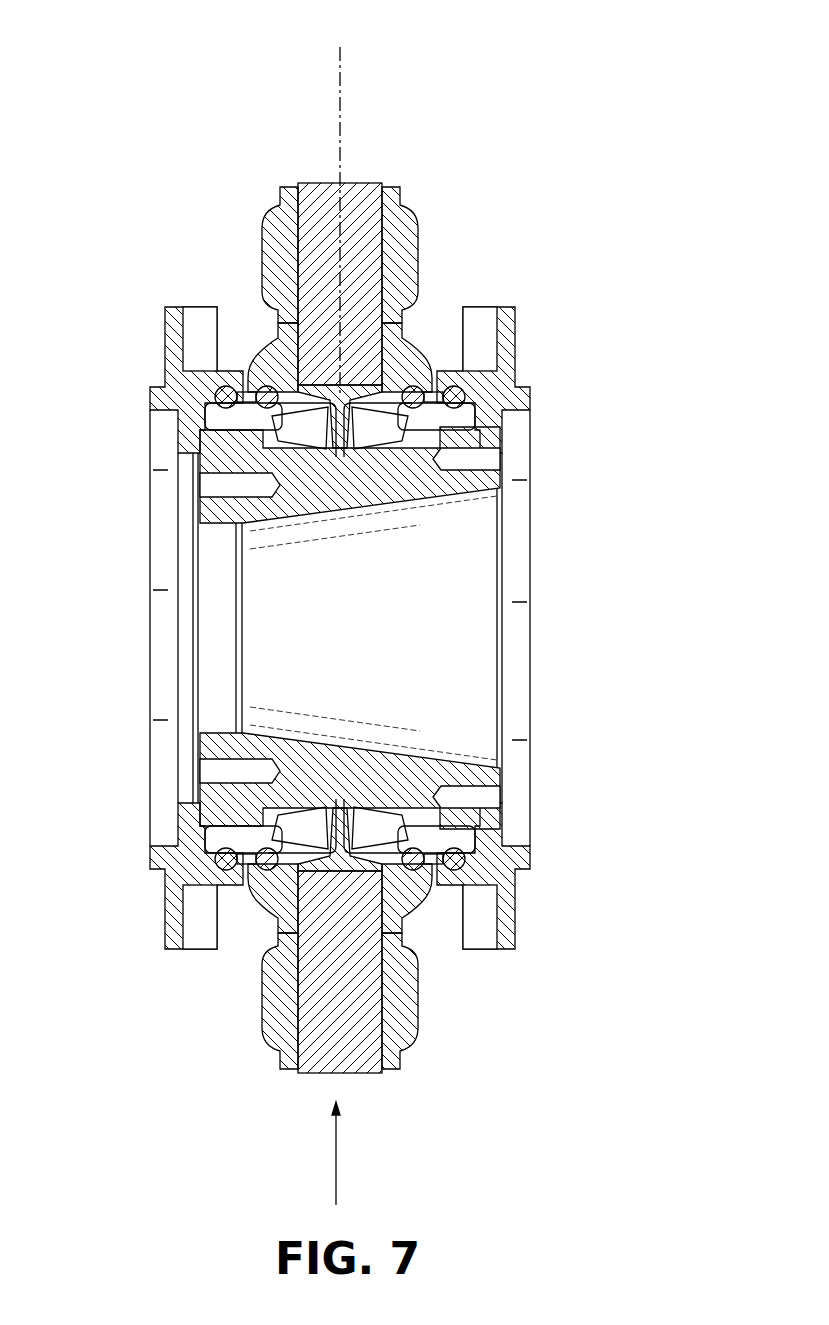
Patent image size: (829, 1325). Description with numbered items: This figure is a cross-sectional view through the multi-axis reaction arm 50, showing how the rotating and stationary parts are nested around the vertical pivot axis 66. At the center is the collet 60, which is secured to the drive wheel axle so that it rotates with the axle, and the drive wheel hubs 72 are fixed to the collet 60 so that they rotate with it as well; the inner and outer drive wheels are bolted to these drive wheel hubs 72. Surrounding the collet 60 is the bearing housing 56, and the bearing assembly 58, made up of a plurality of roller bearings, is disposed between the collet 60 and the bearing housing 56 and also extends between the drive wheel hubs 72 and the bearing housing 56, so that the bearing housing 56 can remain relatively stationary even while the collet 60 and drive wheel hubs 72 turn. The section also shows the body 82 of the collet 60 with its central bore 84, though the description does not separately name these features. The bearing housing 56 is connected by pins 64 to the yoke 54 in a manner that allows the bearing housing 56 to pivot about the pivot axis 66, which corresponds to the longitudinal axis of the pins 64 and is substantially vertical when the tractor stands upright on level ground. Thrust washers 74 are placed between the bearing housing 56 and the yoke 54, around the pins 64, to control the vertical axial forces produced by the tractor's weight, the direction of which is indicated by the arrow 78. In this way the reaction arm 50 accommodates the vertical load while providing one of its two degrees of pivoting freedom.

The multi-axis reaction arm 50 is at (565, 632).
The yoke 54 is at (282, 242).
The bearing housing 56 is at (385, 405).
The bearing assembly 58 is at (388, 437).
The collet 60 is at (510, 387).
The pins 64 is at (357, 210).
The pivot axis 66 is at (340, 67).
The drive wheel hubs 72 is at (172, 318).
The thrust washers 74 is at (277, 322).
The arrow 78 is at (333, 1167).
The rotor body 82 is at (507, 830).
The tapered bore 84 is at (395, 646).